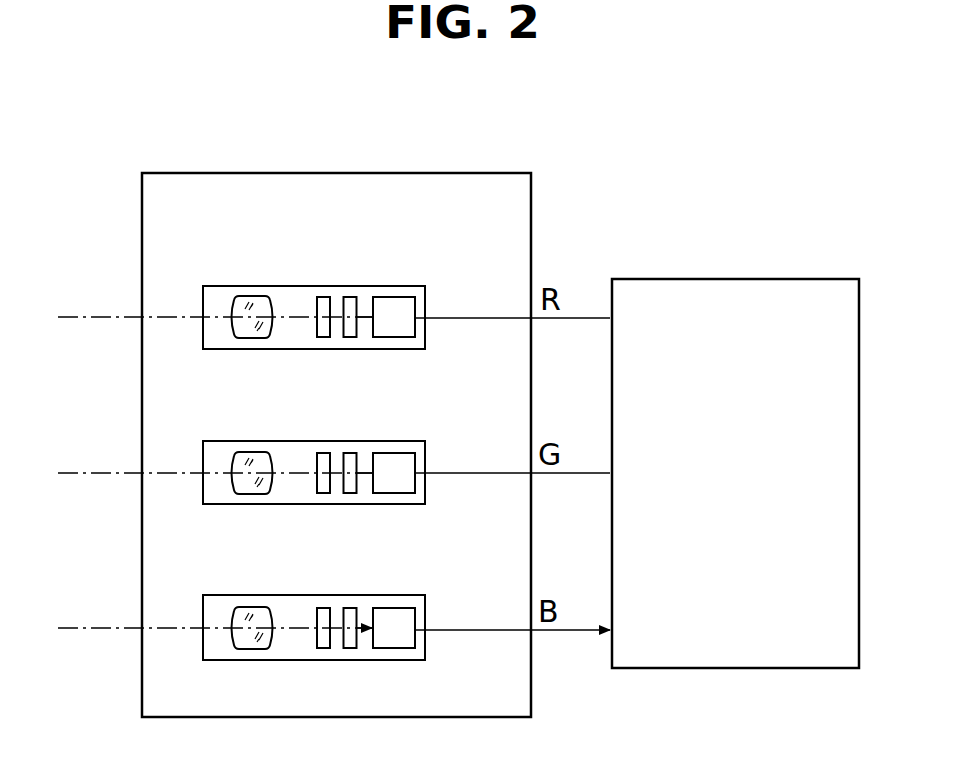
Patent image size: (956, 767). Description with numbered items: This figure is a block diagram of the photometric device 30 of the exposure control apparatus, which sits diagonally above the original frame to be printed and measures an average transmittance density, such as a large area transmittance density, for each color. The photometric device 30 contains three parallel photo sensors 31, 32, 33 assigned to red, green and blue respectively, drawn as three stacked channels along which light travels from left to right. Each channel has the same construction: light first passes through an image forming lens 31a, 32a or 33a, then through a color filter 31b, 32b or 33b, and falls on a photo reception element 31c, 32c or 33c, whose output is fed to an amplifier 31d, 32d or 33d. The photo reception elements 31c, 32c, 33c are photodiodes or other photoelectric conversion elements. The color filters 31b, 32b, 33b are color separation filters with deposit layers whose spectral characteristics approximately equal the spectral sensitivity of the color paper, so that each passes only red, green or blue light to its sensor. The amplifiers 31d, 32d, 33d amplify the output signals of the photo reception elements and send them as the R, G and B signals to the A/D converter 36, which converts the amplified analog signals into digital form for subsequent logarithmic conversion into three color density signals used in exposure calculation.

The photometric device 30 is at (313, 173).
The photo sensor 31 is at (427, 273).
The image forming lens 31a is at (255, 297).
The color filter 31b is at (325, 297).
The photo reception element 31c is at (350, 297).
The amplifier 31d is at (415, 306).
The photo sensor 32 is at (430, 430).
The image forming lens 32a is at (250, 452).
The color filter 32b is at (321, 452).
The photo reception element 32c is at (349, 452).
The amplifier 32d is at (415, 462).
The photo sensor 33 is at (430, 585).
The image forming lens 33a is at (247, 607).
The color filter 33b is at (320, 607).
The photo reception element 33c is at (350, 607).
The amplifier 33d is at (415, 620).
The A/D converter 36 is at (738, 279).